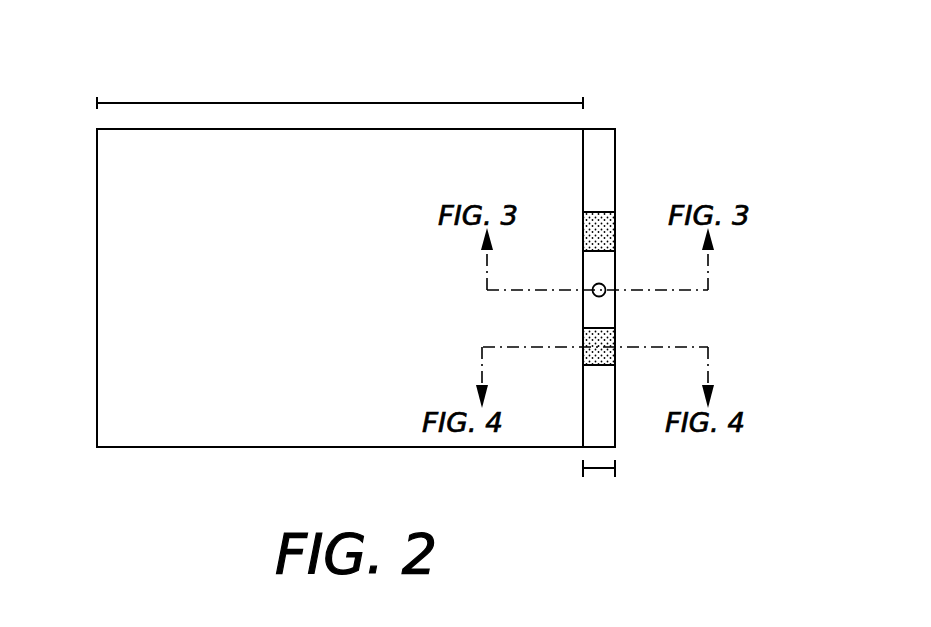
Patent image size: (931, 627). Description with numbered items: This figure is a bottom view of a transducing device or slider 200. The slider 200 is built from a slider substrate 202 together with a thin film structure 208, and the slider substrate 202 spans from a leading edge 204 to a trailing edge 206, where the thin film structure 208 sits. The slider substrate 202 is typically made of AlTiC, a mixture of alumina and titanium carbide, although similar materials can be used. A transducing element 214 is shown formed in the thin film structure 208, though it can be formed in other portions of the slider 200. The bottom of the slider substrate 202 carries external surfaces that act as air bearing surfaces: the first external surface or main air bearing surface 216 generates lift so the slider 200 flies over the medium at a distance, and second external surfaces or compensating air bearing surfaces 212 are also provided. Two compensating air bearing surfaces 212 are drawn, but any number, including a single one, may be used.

The slider 200 is at (692, 84).
The slider substrate 202 is at (347, 103).
The leading edge 204 is at (97, 256).
The trailing edge 206 is at (583, 140).
The thin film structure 208 is at (590, 470).
The compensating air bearing surface 212 is at (608, 226).
The transducing element 214 is at (605, 295).
The main air bearing surface 216 is at (528, 306).